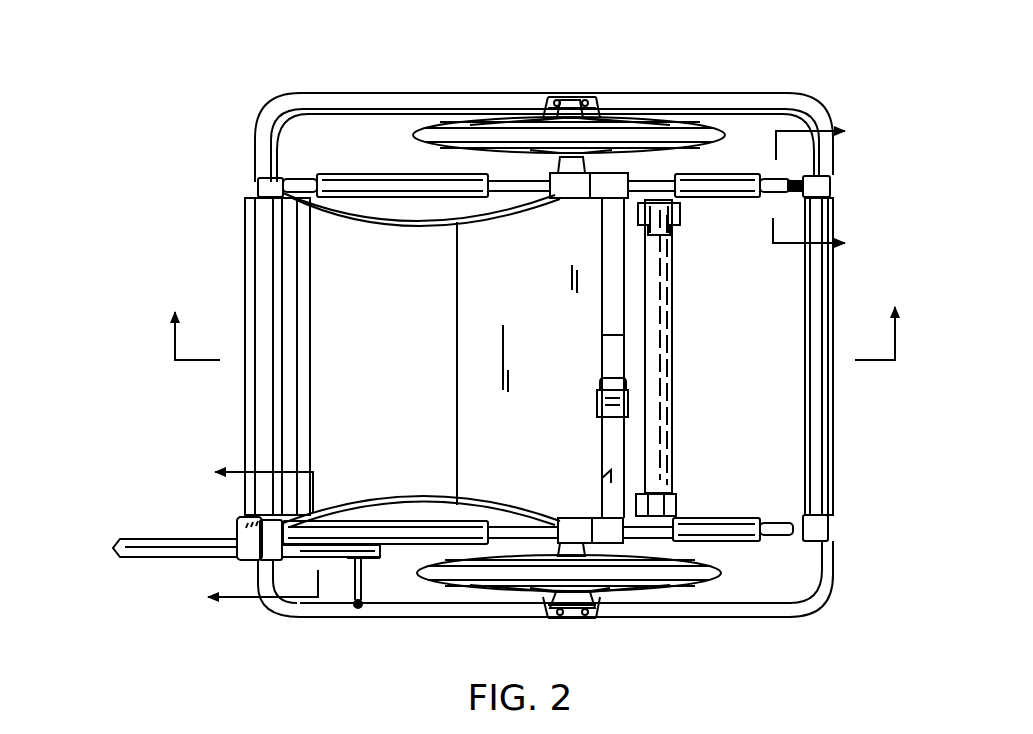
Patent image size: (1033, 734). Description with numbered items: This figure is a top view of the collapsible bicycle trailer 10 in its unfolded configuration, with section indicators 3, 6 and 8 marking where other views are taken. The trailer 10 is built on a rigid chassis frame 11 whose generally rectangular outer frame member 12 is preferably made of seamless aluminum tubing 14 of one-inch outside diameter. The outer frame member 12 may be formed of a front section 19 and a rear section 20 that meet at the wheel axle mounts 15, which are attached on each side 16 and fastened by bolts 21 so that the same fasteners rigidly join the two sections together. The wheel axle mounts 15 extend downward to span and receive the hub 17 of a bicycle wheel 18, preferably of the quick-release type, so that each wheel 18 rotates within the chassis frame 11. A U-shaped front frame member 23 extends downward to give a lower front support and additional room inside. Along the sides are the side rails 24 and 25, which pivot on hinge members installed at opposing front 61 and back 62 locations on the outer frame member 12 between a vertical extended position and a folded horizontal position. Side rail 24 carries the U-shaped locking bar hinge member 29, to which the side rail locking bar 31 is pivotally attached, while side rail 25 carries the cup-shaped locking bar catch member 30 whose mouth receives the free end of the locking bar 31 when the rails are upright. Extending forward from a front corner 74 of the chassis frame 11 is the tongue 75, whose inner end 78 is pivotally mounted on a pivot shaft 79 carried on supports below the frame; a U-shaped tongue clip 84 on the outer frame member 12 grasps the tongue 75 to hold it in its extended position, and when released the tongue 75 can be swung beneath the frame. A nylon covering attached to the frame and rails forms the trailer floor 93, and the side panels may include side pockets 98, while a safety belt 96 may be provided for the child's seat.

The collapsible bicycle trailer 10 is at (742, 62).
The chassis frame 11 is at (362, 92).
The outer frame member 12 is at (646, 95).
The aluminum tubing 14 is at (421, 94).
The wheel axle mounts 15 is at (545, 104).
The side 16 is at (600, 96).
The hub 17 is at (576, 198).
The bicycle wheel 18 is at (680, 135).
The front section 19 is at (479, 94).
The rear section 20 is at (758, 95).
The bolts 21 is at (583, 100).
The U-shaped front frame member 23 is at (306, 258).
The side rail 24 is at (516, 520).
The side rail 25 is at (527, 198).
The locking bar hinge member 29 is at (676, 503).
The locking bar catch member 30 is at (672, 212).
The side rail locking bar 31 is at (666, 406).
The front location 61 is at (261, 186).
The back location 62 is at (822, 184).
The front corner 74 is at (272, 608).
The tongue 75 is at (170, 560).
The inner end 78 is at (355, 520).
The pivot shaft 79 is at (363, 576).
The tongue clip 84 is at (237, 536).
The trailer floor 93 is at (406, 392).
The safety belt 96 is at (597, 400).
The side pockets 98 is at (486, 213).
The section line 3 is at (535, 333).
The section line 6 is at (817, 187).
The section line 8 is at (263, 534).